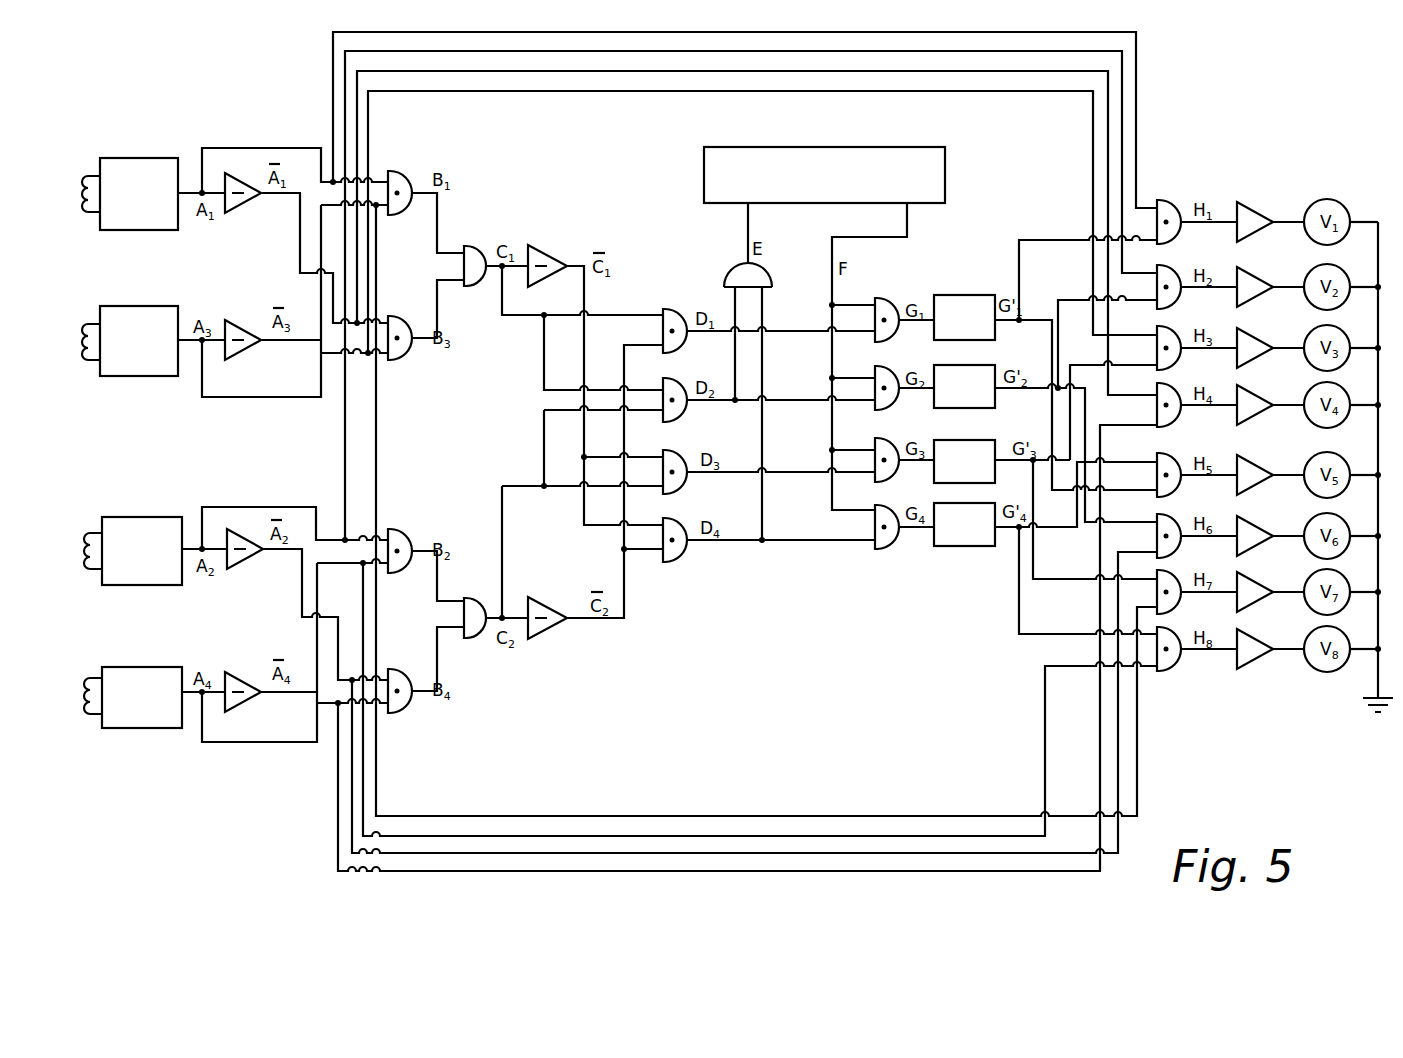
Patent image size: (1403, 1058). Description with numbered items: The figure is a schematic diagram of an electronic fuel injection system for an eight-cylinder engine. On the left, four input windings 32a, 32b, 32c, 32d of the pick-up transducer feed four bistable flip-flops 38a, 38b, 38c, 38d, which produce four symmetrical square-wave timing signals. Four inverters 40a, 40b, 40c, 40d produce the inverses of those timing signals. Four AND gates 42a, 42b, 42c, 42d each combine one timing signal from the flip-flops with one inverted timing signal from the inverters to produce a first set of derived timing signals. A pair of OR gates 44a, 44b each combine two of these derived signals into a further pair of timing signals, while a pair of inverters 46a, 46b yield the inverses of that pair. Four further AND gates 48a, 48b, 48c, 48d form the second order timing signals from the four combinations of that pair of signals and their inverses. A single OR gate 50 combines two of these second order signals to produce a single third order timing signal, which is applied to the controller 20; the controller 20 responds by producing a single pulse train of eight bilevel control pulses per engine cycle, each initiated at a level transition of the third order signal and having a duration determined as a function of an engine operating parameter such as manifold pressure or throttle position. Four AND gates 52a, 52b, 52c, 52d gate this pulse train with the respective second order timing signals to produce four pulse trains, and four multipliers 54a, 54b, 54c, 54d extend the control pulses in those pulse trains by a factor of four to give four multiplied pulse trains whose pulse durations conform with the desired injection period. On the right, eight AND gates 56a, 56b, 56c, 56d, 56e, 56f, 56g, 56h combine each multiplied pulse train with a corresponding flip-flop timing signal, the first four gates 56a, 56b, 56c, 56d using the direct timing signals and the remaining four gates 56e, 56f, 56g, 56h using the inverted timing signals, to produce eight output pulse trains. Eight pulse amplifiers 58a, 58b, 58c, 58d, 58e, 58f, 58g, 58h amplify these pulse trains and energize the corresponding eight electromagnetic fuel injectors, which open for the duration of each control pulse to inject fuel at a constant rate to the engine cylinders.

The controller 20 is at (917, 160).
The input winding 32a is at (86, 214).
The input winding 32b is at (88, 571).
The input winding 32c is at (86, 362).
The input winding 32d is at (88, 716).
The flip-flop 38a is at (140, 178).
The flip-flop 38b is at (153, 524).
The flip-flop 38c is at (155, 328).
The flip-flop 38d is at (158, 676).
The inverter 40a is at (238, 210).
The inverter 40b is at (243, 565).
The inverter 40c is at (246, 355).
The inverter 40d is at (248, 706).
The AND gate 42a is at (400, 170).
The AND gate 42b is at (400, 528).
The AND gate 42c is at (418, 290).
The AND gate 42d is at (402, 712).
The OR gate 44a is at (472, 246).
The OR gate 44b is at (466, 624).
The inverter 46a is at (552, 260).
The inverter 46b is at (545, 610).
The AND gate 48a is at (675, 312).
The AND gate 48b is at (676, 410).
The AND gate 48c is at (676, 482).
The AND gate 48d is at (676, 562).
The OR gate 50 is at (770, 270).
The AND gate 52a is at (885, 300).
The AND gate 52b is at (880, 376).
The AND gate 52c is at (880, 448).
The AND gate 52d is at (887, 549).
The multiplier 54a is at (973, 295).
The multiplier 54b is at (978, 372).
The multiplier 54c is at (992, 430).
The multiplier 54d is at (980, 546).
The AND gate 56a is at (1168, 200).
The AND gate 56b is at (1168, 266).
The AND gate 56c is at (1168, 327).
The AND gate 56d is at (1168, 384).
The AND gate 56e is at (1168, 454).
The AND gate 56f is at (1168, 515).
The AND gate 56g is at (1168, 571).
The AND gate 56h is at (1168, 672).
The pulse amplifier 58a is at (1250, 212).
The pulse amplifier 58b is at (1250, 277).
The pulse amplifier 58c is at (1250, 338).
The pulse amplifier 58d is at (1250, 395).
The pulse amplifier 58e is at (1250, 465).
The pulse amplifier 58f is at (1250, 526).
The pulse amplifier 58g is at (1250, 582).
The pulse amplifier 58h is at (1253, 660).